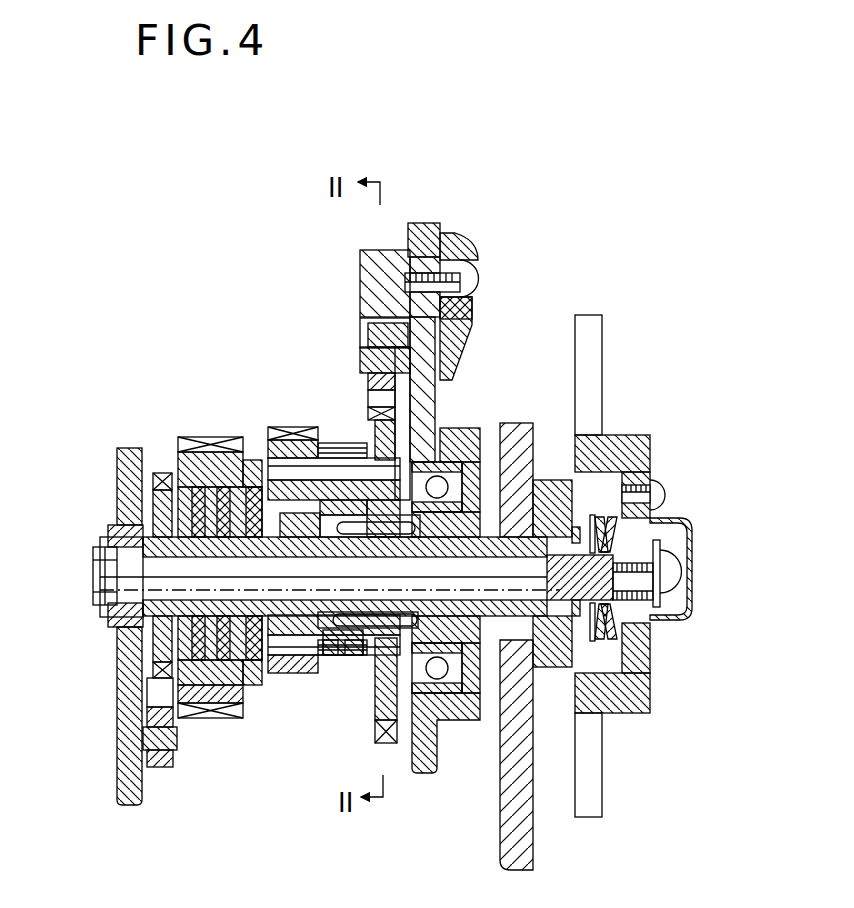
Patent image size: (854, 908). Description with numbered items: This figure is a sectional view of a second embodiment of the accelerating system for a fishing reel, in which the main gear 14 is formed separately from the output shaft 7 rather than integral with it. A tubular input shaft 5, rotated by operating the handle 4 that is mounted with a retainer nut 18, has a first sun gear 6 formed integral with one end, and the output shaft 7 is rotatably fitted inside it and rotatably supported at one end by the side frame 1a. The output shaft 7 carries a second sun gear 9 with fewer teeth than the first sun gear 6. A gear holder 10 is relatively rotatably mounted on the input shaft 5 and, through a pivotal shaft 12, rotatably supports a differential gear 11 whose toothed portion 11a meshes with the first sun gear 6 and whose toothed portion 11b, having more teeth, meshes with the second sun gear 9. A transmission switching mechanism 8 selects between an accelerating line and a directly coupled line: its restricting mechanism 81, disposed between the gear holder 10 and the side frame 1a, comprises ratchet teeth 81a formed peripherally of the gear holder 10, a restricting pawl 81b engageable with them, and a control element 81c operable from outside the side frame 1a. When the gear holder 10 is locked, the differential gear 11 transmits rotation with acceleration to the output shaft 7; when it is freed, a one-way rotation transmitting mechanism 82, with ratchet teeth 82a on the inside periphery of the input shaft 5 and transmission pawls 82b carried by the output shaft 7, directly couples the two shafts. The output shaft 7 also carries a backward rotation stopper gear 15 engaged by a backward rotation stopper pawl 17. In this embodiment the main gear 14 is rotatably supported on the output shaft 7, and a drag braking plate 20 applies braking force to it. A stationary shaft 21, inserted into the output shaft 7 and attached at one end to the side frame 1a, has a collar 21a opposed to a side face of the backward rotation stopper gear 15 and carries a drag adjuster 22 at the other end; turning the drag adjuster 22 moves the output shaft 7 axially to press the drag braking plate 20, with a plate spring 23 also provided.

The side frame 1a is at (125, 463).
The handle 4 is at (525, 840).
The input shaft 5 is at (485, 513).
The first sun gear 6 is at (330, 660).
The output shaft 7 is at (543, 513).
The transmission switching mechanism 8 is at (353, 330).
The second sun gear 9 is at (282, 683).
The gear holder 10 is at (406, 386).
The differential gear 11 is at (290, 424).
The toothed portion 11a is at (345, 445).
The toothed portion 11b is at (283, 428).
The pivotal shaft 12 is at (380, 450).
The main gear 14 is at (213, 437).
The backward rotation stopper gear 15 is at (157, 500).
The backward rotation stopper pawl 17 is at (157, 690).
The retainer nut 18 is at (567, 657).
The drag braking plate 20 is at (225, 443).
The stationary shaft 21 is at (165, 582).
The collar 21a is at (148, 522).
The drag adjuster 22 is at (640, 457).
The plate spring 23 is at (618, 523).
The restricting mechanism 81 is at (452, 357).
The ratchet teeth 81a is at (363, 417).
The restricting pawl 81b is at (360, 393).
The control element 81c is at (462, 245).
The one-way rotation transmitting mechanism 82 is at (400, 496).
The ratchet teeth 82a is at (333, 655).
The transmission pawls 82b is at (358, 660).